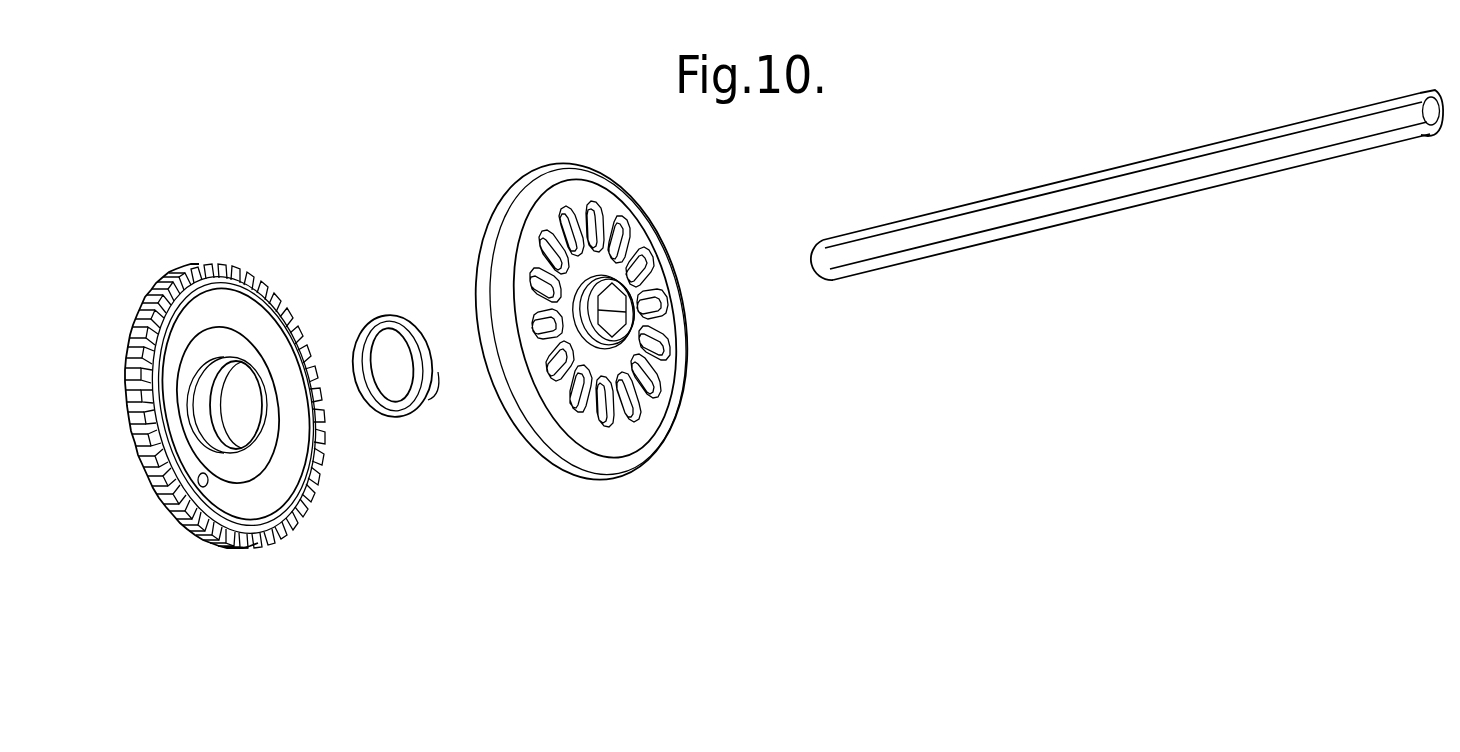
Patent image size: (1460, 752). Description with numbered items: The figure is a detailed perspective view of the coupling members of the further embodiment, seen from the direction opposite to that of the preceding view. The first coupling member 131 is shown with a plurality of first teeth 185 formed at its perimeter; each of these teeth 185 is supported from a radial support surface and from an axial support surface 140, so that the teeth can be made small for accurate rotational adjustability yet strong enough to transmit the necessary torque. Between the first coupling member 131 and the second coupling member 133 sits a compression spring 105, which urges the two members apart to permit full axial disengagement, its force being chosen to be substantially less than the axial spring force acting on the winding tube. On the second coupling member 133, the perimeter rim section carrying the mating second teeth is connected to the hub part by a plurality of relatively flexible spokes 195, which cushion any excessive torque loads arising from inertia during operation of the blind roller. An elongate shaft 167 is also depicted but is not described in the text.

The first coupling member 131 is at (261, 405).
The axial support surface 140 is at (208, 264).
The first teeth 185 is at (318, 483).
The compression spring 105 is at (382, 316).
The second coupling member 133 is at (633, 321).
The spokes 195 is at (648, 407).
The drive shaft 167 is at (1105, 168).